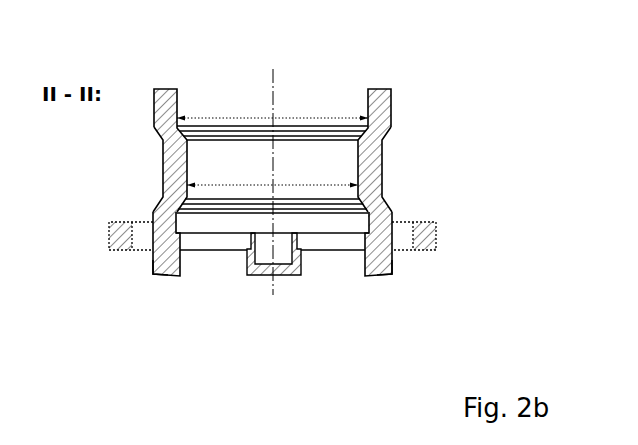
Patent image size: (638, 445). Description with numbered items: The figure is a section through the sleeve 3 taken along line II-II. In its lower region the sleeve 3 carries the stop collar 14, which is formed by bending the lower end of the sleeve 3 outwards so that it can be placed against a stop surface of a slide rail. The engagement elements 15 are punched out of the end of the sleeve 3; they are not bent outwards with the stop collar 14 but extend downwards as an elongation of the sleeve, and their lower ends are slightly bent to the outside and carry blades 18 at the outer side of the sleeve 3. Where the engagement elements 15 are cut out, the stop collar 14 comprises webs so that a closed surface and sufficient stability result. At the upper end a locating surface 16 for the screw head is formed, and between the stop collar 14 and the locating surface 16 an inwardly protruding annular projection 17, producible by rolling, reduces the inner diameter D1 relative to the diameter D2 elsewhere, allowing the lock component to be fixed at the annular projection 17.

The sleeve 3 is at (459, 107).
The stop collar 14 is at (426, 250).
The engagement elements 15 is at (165, 278).
The locating surface 16 is at (380, 88).
The annular projection 17 is at (383, 168).
The blades 18 is at (150, 277).